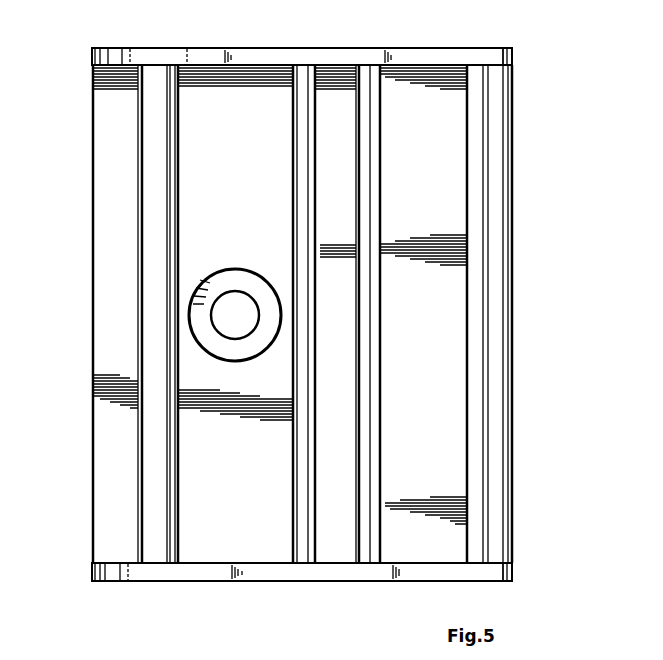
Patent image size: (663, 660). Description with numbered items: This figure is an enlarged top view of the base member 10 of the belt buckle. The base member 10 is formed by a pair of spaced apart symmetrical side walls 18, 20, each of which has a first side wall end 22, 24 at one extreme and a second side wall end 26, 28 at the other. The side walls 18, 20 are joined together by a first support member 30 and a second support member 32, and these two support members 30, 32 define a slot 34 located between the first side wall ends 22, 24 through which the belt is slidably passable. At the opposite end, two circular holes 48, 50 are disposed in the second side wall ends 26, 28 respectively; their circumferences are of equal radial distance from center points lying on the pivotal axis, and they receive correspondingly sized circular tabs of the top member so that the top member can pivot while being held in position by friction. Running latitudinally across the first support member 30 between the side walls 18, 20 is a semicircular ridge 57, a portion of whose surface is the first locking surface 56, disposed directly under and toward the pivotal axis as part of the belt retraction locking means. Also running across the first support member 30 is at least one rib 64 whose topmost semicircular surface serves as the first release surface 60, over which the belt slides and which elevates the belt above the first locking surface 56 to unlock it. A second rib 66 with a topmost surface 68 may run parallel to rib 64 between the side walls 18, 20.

The base member 10 is at (478, 46).
The side wall 18 is at (266, 48).
The side wall 20 is at (315, 584).
The first side wall end 22 is at (512, 59).
The first side wall end 24 is at (512, 573).
The second side wall end 26 is at (92, 57).
The second side wall end 28 is at (92, 572).
The first support member 30 is at (250, 562).
The second support member 32 is at (508, 350).
The slot 34 is at (478, 402).
The circular hole 48 is at (186, 62).
The circular hole 50 is at (175, 565).
The first locking surface 56 is at (150, 557).
The semicircular ridge 57 is at (178, 530).
The first release surface 60 is at (302, 70).
The rib 64 is at (332, 70).
The second rib 66 is at (385, 90).
The topmost surface 68 is at (372, 68).